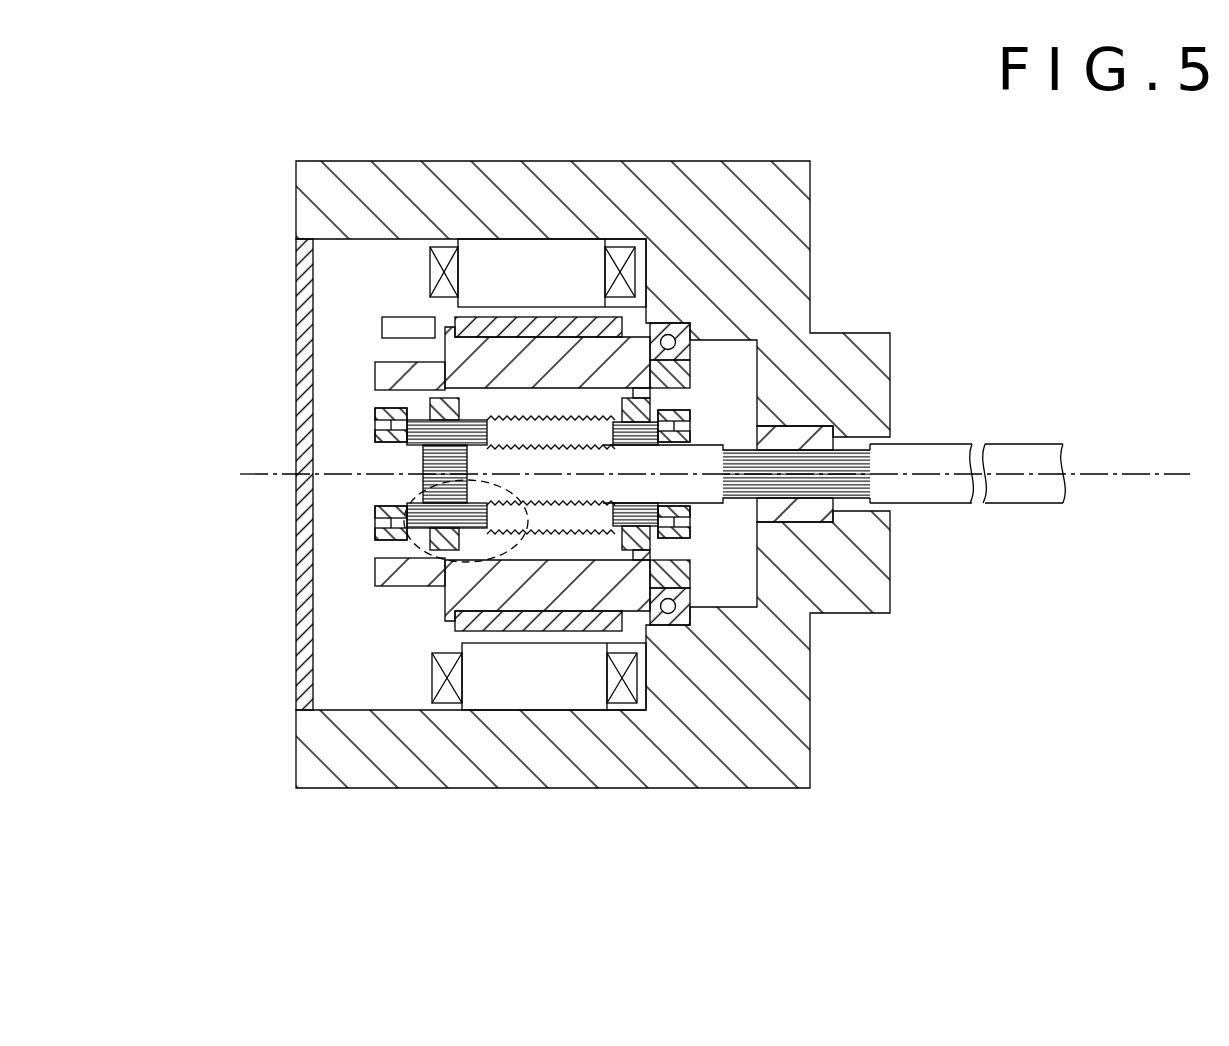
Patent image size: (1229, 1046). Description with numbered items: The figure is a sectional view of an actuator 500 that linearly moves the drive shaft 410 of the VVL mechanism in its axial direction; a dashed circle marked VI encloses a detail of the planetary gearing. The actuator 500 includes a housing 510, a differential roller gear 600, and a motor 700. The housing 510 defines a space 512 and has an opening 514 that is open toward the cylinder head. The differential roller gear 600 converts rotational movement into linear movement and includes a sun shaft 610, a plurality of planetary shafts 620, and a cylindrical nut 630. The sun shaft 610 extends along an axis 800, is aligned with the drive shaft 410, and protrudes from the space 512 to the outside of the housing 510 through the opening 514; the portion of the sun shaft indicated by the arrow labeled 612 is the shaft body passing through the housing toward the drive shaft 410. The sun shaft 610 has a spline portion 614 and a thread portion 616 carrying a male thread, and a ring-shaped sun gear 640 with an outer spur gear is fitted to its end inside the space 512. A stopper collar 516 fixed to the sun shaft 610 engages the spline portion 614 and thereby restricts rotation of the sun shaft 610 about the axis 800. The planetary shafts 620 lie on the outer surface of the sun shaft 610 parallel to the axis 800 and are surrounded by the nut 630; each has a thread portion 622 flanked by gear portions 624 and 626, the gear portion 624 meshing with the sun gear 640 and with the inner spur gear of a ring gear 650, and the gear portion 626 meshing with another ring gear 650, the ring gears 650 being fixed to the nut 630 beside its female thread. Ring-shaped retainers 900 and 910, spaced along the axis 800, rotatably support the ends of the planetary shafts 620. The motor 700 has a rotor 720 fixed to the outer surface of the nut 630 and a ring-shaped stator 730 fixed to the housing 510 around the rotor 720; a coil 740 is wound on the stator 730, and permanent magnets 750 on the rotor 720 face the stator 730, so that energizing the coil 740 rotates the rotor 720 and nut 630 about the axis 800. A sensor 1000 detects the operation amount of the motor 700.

The drive shaft 410 is at (1007, 445).
The actuator 500 is at (263, 197).
The housing 510 is at (336, 762).
The space 512 is at (337, 675).
The opening 514 is at (892, 452).
The stopper collar 516 is at (862, 522).
The differential roller gear 600 is at (400, 603).
The sun shaft 610 is at (730, 562).
The screw shaft 612 is at (724, 512).
The spline portion 614 is at (852, 518).
The thread portion 616 is at (600, 640).
The planetary shafts 620 is at (589, 522).
The thread portion 622 is at (589, 404).
The gear portion 624 is at (421, 432).
The gear portion 626 is at (640, 396).
The nut 630 is at (538, 568).
The sun gear 640 is at (420, 456).
The ring gear 650 is at (377, 573).
The motor 700 is at (509, 502).
The rotor 720 is at (452, 604).
The stator 730 is at (488, 700).
The coil 740 is at (618, 252).
The permanent magnets 750 is at (512, 326).
The axis 800 is at (244, 478).
The retainer 900 is at (375, 420).
The retainer 910 is at (692, 415).
The sensor 1000 is at (382, 323).
The detail section VI is at (412, 492).